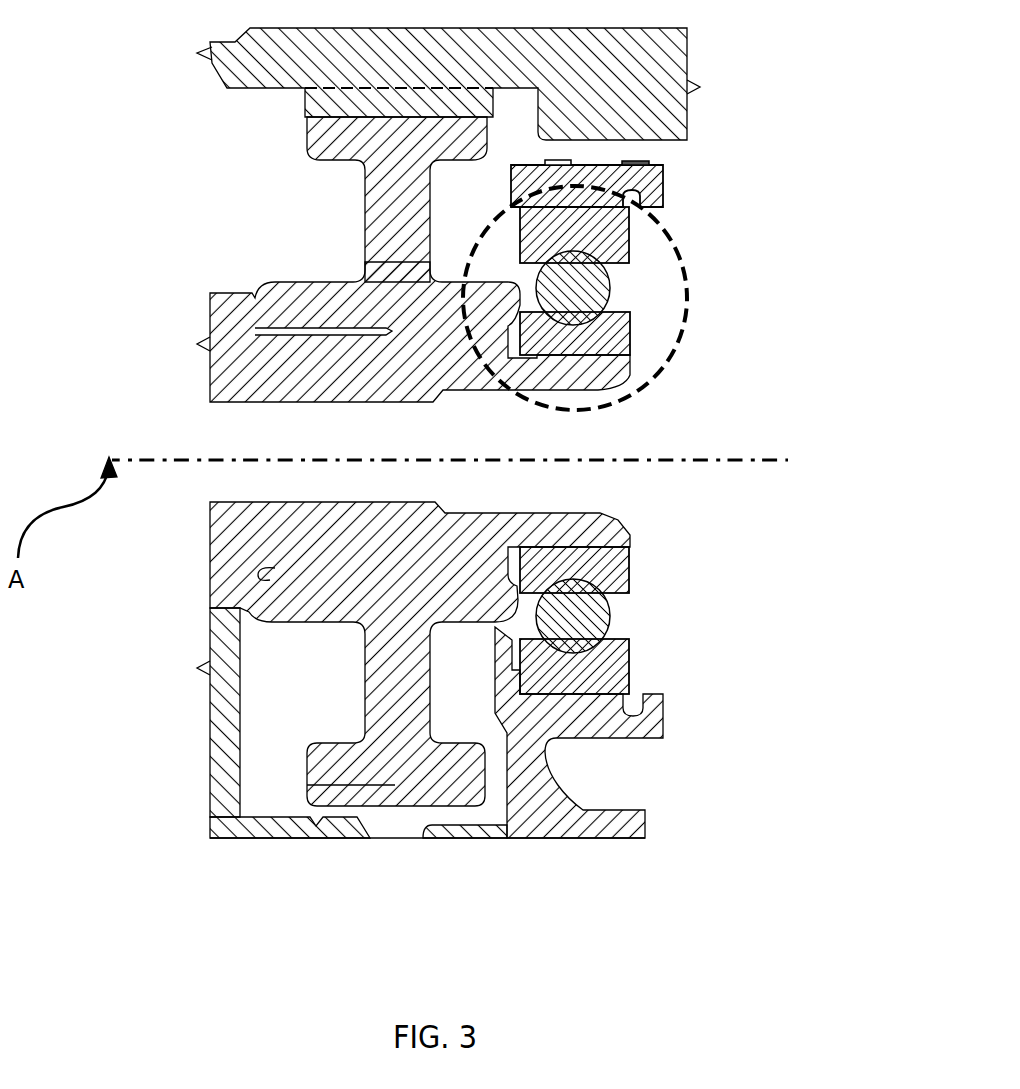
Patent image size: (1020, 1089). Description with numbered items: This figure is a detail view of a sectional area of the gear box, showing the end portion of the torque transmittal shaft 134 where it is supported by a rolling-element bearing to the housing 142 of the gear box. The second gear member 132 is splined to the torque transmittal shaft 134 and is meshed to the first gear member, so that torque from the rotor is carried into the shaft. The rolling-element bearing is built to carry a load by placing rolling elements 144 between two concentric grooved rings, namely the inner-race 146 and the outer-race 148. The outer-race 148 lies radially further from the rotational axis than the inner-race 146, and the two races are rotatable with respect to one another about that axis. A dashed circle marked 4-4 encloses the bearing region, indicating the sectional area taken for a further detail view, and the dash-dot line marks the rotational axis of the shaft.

The second gear member 132 is at (393, 222).
The torque transmittal shaft 134 is at (265, 382).
The housing 142 is at (665, 191).
The rolling elements 144 is at (575, 289).
The inner-race 146 is at (630, 340).
The outer-race 148 is at (628, 242).
The section line 4-4 is at (670, 243).